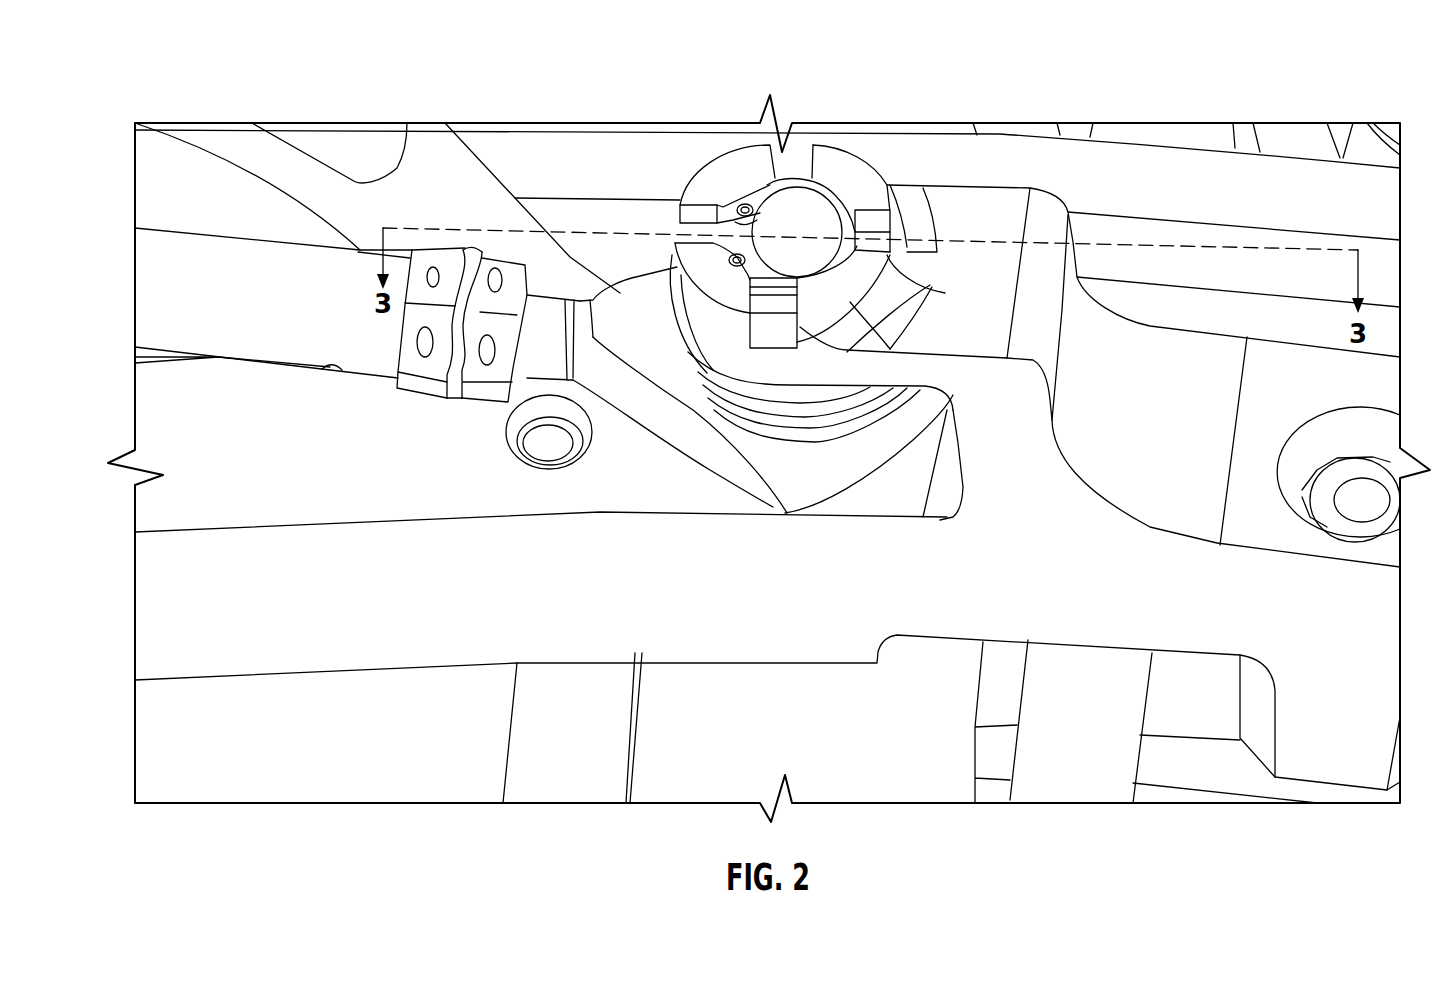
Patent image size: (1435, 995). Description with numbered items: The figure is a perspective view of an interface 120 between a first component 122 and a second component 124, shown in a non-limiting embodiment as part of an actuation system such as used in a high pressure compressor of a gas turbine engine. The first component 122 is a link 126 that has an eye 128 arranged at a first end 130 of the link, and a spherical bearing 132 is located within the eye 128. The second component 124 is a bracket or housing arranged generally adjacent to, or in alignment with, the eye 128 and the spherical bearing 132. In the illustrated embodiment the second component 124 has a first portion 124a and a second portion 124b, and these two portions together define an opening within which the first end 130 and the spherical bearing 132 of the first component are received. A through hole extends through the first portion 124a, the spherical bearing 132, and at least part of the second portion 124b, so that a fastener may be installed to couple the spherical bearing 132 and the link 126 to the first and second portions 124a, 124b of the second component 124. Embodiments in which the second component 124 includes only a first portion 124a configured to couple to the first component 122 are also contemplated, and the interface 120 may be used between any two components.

The interface 120 is at (731, 112).
The first component 122 is at (473, 226).
The second component 124 is at (994, 256).
The first portion 124a is at (849, 185).
The second portion 124b is at (872, 503).
The link 126 is at (357, 222).
The eye 128 is at (697, 372).
The first end 130 is at (455, 385).
The spherical bearing 132 is at (790, 392).